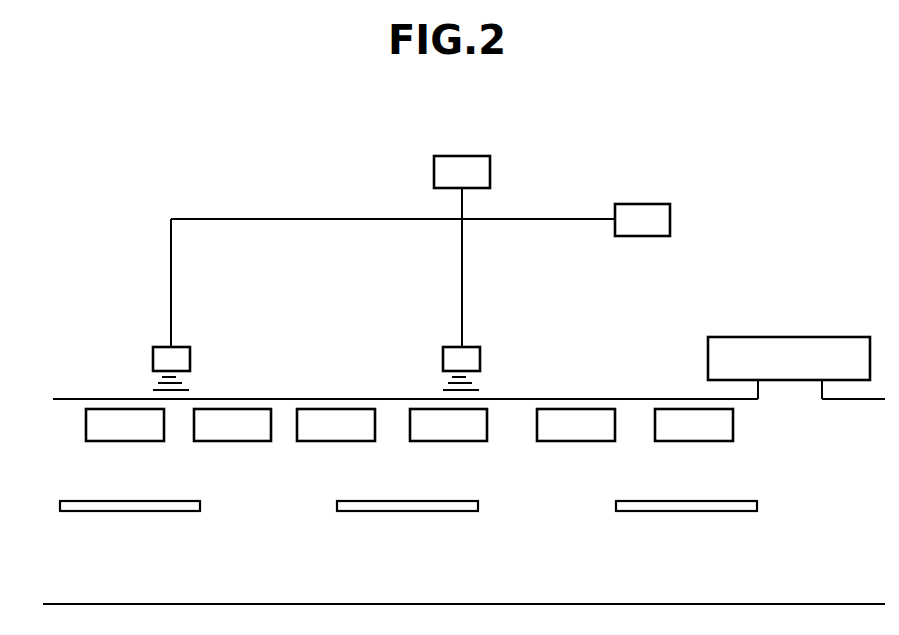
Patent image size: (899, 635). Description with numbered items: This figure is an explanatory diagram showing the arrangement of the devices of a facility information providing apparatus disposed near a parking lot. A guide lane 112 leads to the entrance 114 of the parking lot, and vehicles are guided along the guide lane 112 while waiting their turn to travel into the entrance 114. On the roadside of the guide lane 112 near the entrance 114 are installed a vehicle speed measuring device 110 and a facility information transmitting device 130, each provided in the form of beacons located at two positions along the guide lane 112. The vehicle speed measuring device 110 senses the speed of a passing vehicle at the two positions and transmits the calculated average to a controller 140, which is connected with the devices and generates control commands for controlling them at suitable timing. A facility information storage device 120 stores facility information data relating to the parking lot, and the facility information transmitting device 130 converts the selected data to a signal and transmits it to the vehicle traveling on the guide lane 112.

The controller 140 is at (491, 173).
The facility information storage device 120 is at (672, 217).
The vehicle speed measuring device 110 is at (191, 355).
The facility information transmitting device 130 is at (481, 355).
The entrance 114 is at (772, 337).
The guide lane 112 is at (89, 468).